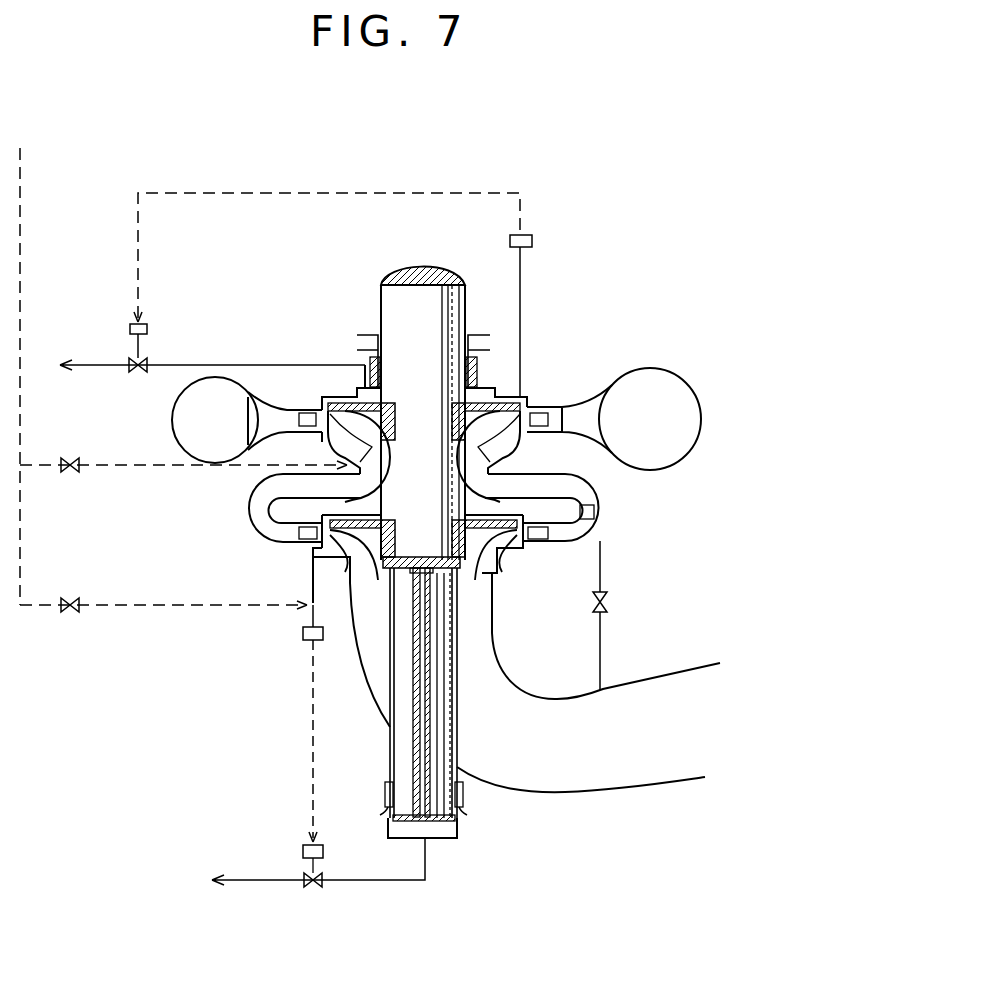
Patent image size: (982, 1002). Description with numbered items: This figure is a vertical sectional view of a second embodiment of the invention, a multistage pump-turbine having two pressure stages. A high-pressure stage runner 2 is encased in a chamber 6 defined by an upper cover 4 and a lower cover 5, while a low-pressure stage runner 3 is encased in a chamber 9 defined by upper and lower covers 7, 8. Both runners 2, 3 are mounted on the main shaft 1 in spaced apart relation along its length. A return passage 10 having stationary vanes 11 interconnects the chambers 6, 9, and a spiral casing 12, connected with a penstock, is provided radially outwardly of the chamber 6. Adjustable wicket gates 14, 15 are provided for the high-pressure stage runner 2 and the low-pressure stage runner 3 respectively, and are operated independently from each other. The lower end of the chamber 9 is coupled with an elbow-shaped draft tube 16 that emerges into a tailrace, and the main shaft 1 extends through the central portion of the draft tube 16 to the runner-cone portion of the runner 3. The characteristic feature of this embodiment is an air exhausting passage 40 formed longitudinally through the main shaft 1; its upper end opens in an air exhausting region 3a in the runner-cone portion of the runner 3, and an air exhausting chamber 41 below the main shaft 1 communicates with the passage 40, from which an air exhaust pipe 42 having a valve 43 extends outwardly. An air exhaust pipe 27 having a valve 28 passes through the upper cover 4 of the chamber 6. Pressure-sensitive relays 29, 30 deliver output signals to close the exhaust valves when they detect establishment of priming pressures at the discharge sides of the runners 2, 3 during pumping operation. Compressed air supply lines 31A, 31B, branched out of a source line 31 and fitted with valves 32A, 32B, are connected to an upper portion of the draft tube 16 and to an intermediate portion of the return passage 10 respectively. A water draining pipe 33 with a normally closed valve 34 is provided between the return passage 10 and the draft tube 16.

The main shaft 1 is at (463, 290).
The high-pressure stage runner 2 is at (488, 456).
The low-pressure stage runner 3 is at (481, 553).
The air exhausting region 3a is at (377, 567).
The upper cover 4 is at (322, 397).
The lower cover 5 is at (326, 454).
The chamber 6 is at (500, 440).
The upper cover 7 is at (456, 500).
The lower cover 8 is at (331, 576).
The chamber 9 is at (501, 545).
The return passage 10 is at (598, 524).
The stationary vanes 11 is at (596, 512).
The spiral casing 12 is at (676, 463).
The wicket gates 14 is at (541, 428).
The wicket gates 15 is at (546, 540).
The draft tube 16 is at (512, 672).
The air exhaust pipe 27 is at (235, 365).
The valve 28 is at (138, 372).
The pressure-sensitive relay 29 is at (532, 241).
The pressure-sensitive relay 30 is at (300, 632).
The source line 31 is at (20, 290).
The compressed air supply line 31A is at (148, 606).
The compressed air supply line 31B is at (150, 466).
The valve 32A is at (70, 612).
The valve 32B is at (70, 472).
The water draining pipe 33 is at (604, 663).
The normally closed valve 34 is at (606, 601).
The air exhausting passage 40 is at (413, 701).
The air exhausting chamber 41 is at (460, 825).
The air exhaust pipe 42 is at (392, 880).
The valve 43 is at (313, 887).